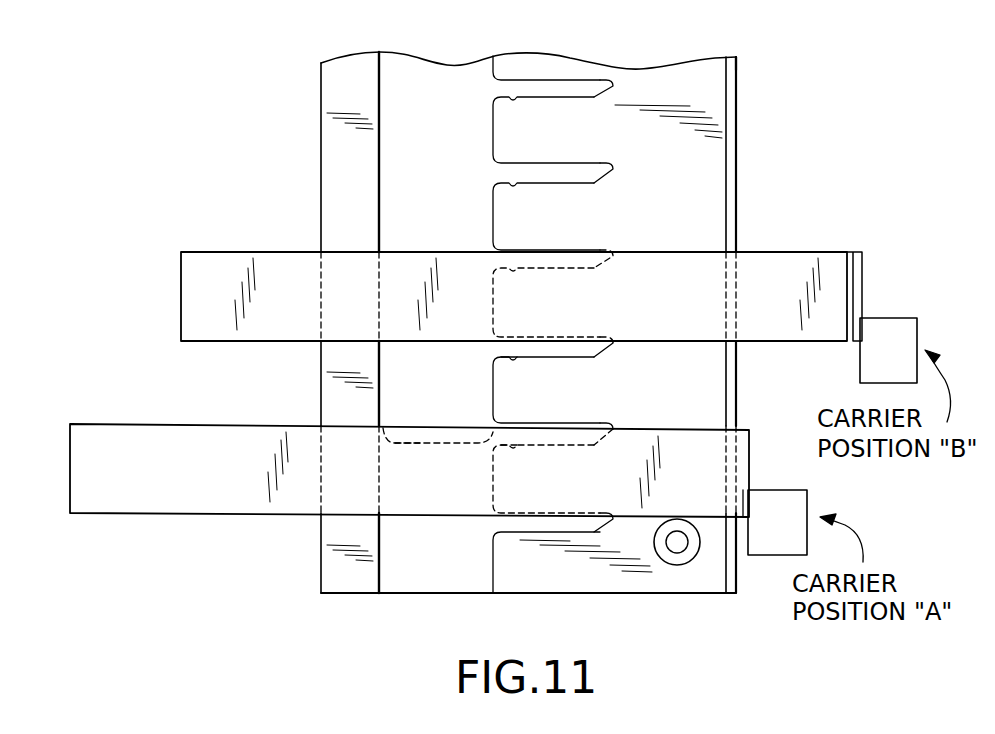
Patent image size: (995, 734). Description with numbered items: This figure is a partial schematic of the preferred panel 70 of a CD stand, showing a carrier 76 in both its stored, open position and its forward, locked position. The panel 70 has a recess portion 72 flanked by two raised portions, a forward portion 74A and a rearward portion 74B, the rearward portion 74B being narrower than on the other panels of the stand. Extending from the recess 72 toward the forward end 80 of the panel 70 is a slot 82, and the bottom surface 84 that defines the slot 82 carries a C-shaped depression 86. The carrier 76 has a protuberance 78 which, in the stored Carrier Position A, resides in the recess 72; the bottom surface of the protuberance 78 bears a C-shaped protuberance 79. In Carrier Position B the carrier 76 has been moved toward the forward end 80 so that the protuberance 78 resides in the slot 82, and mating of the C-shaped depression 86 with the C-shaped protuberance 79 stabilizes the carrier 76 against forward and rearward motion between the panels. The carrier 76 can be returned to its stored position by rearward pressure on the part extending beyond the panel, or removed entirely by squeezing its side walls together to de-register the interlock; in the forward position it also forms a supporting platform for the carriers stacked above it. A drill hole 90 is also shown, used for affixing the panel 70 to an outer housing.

The panel 70 is at (750, 93).
The recess portion 72 is at (528, 308).
The forward portion 74A is at (703, 308).
The rearward portion 74B is at (360, 62).
The carrier 76 is at (807, 262).
The protuberance 78 is at (535, 260).
The C-shaped protuberance 79 is at (401, 447).
The forward end 80 is at (733, 183).
The slot 82 is at (567, 168).
The bottom surface 84 is at (533, 358).
The C-shaped depression 86 is at (513, 447).
The drill hole 90 is at (688, 556).